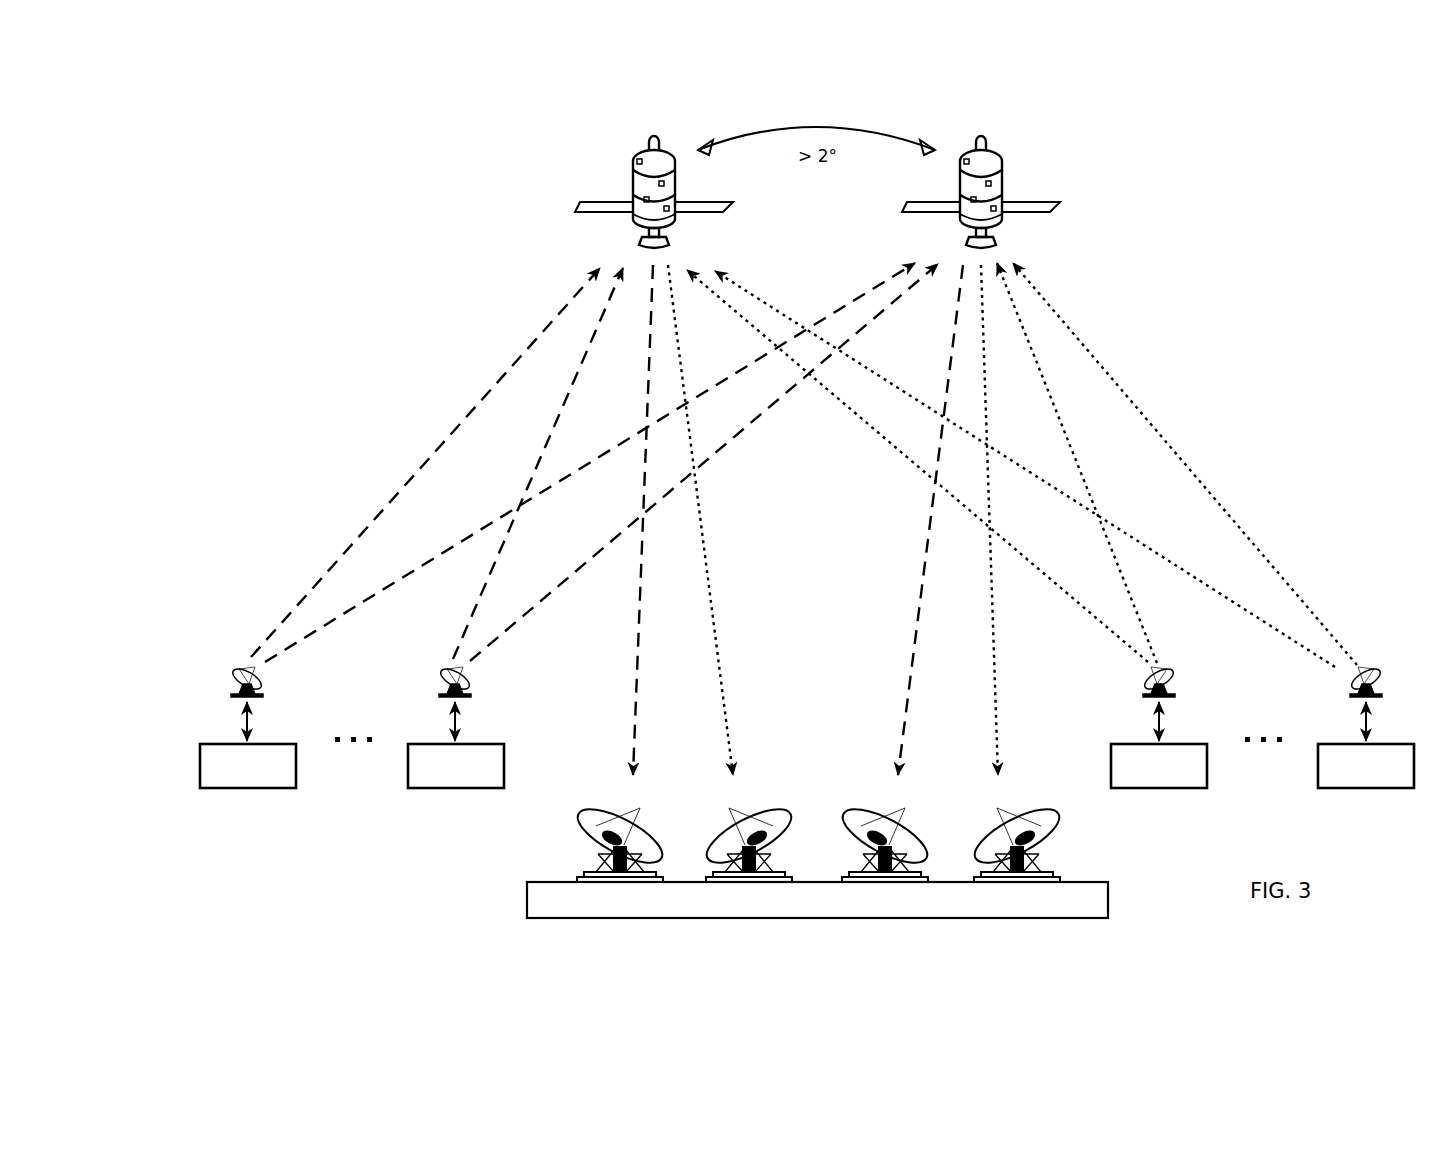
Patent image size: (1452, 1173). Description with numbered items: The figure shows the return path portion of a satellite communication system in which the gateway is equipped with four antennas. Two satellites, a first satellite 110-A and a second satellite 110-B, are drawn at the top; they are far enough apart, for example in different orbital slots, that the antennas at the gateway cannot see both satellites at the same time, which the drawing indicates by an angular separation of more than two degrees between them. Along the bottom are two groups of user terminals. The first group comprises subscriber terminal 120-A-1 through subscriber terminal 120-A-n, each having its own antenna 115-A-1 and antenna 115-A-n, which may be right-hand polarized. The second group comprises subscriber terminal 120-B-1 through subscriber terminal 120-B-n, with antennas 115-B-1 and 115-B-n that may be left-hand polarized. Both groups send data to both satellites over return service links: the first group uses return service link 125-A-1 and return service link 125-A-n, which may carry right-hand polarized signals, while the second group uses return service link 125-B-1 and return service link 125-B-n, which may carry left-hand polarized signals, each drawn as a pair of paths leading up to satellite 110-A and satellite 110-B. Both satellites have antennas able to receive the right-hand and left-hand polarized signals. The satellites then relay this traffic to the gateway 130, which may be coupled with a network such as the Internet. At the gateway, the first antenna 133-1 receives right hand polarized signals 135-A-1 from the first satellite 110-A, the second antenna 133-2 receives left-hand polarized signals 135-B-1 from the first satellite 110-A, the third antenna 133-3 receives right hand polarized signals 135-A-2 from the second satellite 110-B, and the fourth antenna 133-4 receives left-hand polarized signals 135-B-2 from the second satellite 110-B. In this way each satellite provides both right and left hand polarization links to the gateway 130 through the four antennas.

The first satellite 110-A is at (633, 172).
The second satellite 110-B is at (961, 185).
The antenna 115-A-1 is at (240, 690).
The antenna 115-A-n is at (442, 688).
The antenna 115-B-1 is at (1165, 690).
The antenna 115-B-n is at (1355, 688).
The subscriber terminal 120-A-1 is at (285, 788).
The subscriber terminal 120-A-n is at (435, 788).
The subscriber terminal 120-B-1 is at (1185, 788).
The subscriber terminal 120-B-n is at (1338, 788).
The return service link 125-A-1 is at (427, 458).
The return service link 125-A-n is at (508, 533).
The return service link 125-B-1 is at (1060, 588).
The return service link 125-B-n is at (1188, 540).
The gateway 130 is at (817, 900).
The first antenna 133-1 is at (583, 827).
The second antenna 133-2 is at (775, 812).
The third antenna 133-3 is at (897, 838).
The fourth antenna 133-4 is at (1035, 857).
The right hand polarized signals 135-A-1 is at (642, 590).
The right hand polarized signals 135-A-2 is at (917, 628).
The left-hand polarized signals 135-B-1 is at (712, 604).
The left-hand polarized signals 135-B-2 is at (993, 628).